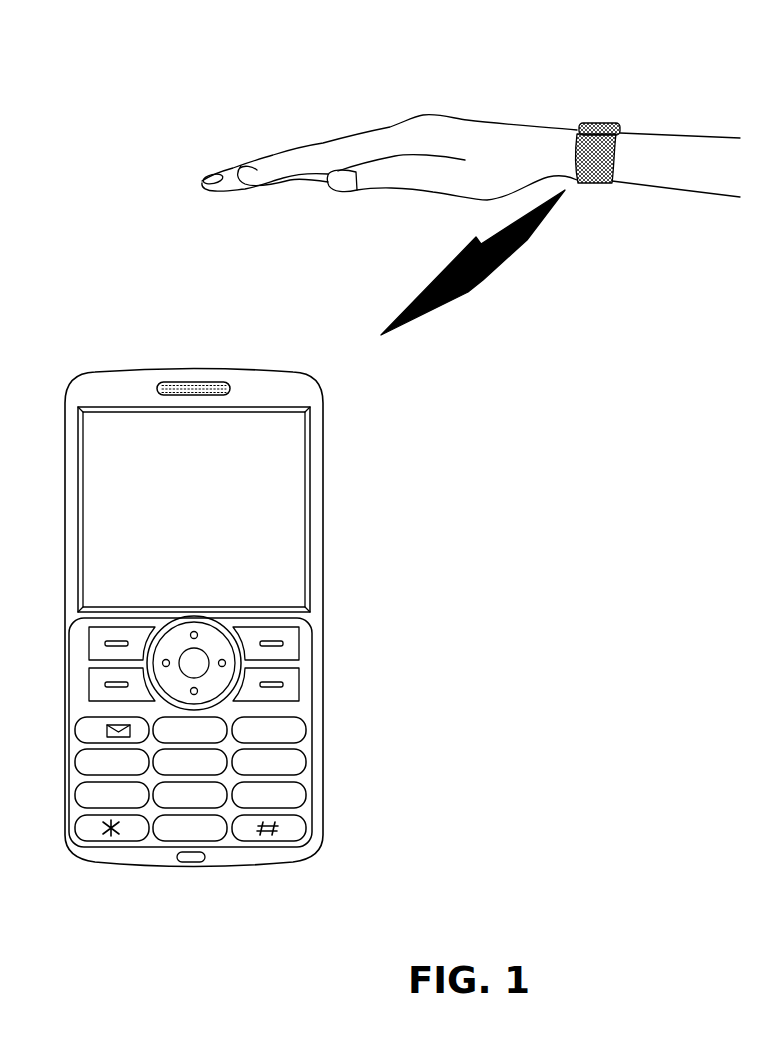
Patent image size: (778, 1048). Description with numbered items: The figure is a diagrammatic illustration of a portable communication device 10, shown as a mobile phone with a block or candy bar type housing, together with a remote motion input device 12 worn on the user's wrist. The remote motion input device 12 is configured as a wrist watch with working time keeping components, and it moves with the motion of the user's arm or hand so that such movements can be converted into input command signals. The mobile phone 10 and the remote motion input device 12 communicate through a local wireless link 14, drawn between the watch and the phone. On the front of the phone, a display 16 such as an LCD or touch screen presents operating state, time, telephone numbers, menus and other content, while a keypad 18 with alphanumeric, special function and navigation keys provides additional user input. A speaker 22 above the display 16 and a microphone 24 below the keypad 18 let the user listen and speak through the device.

The portable communication device 10 is at (70, 336).
The remote motion input device 12 is at (634, 58).
The local wireless link 14 is at (483, 280).
The display 16 is at (283, 492).
The keypad 18 is at (364, 725).
The speaker 22 is at (193, 380).
The microphone 24 is at (190, 862).